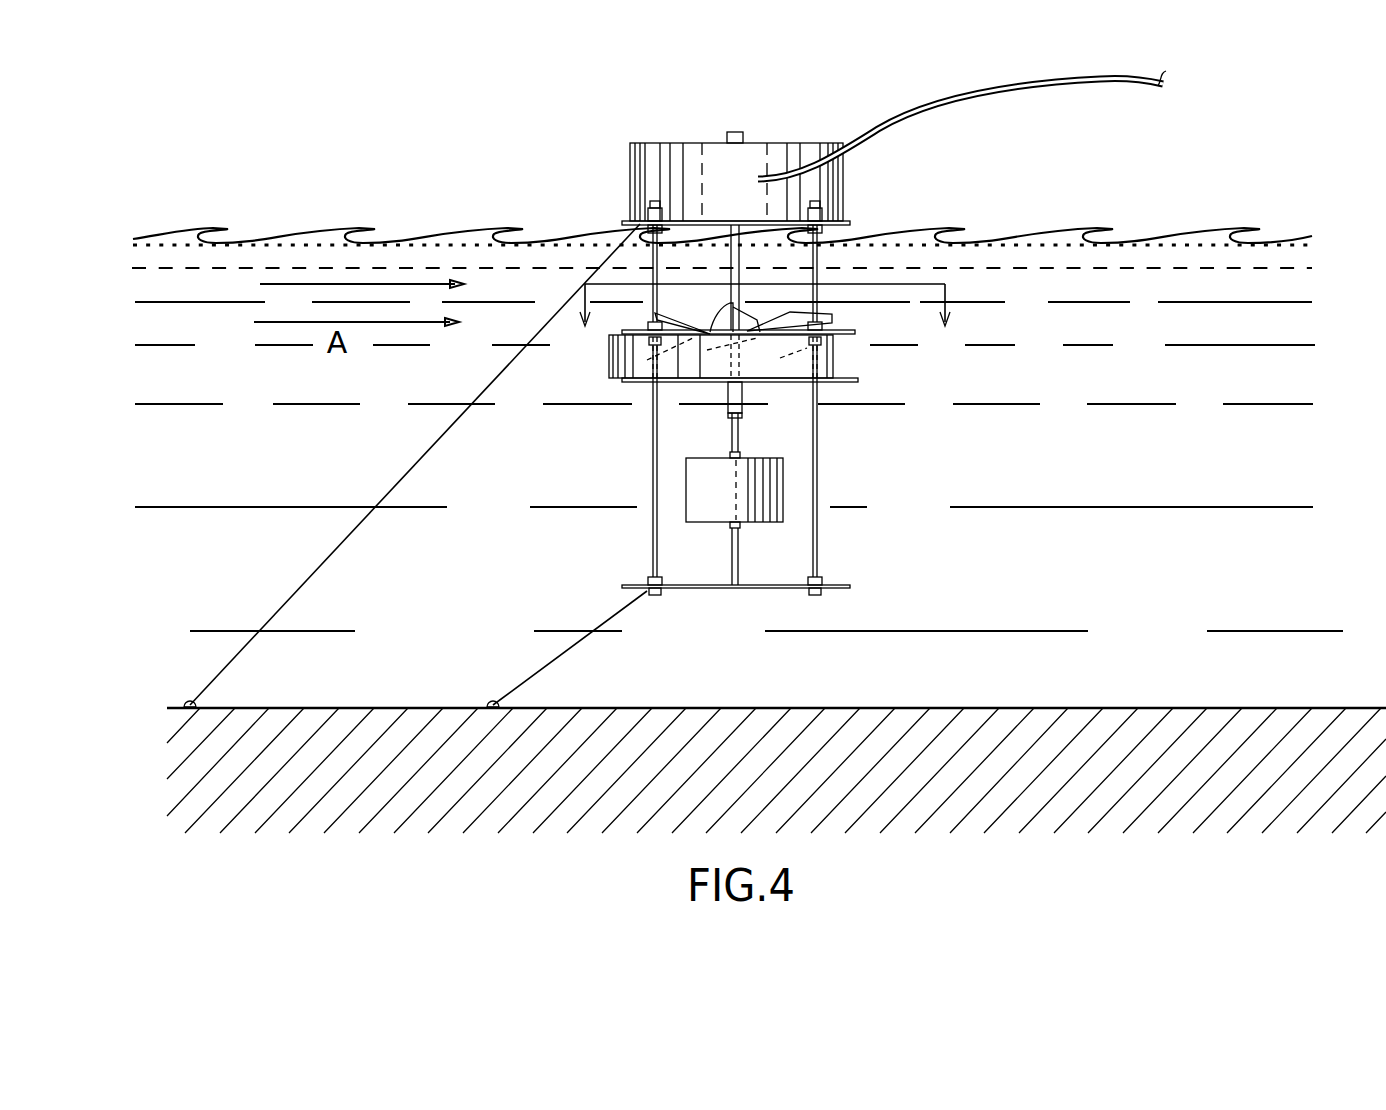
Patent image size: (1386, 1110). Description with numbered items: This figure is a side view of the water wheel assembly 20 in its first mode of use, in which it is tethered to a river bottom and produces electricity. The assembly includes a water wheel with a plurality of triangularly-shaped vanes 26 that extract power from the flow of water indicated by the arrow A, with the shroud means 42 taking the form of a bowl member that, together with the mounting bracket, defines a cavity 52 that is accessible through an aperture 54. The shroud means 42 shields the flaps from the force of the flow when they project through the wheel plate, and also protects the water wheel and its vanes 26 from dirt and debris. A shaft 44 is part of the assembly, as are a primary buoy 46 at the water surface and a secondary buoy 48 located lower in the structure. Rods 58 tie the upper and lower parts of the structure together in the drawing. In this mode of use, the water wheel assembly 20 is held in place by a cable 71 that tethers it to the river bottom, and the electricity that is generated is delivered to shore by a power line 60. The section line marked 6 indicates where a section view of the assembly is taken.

The water wheel assembly 20 is at (658, 105).
The primary buoy 46 is at (663, 177).
The power line 60 is at (978, 92).
The triangularly-shaped vanes 26 is at (790, 314).
The shroud means 42 is at (623, 352).
The shaft 44 is at (732, 436).
The secondary buoy 48 is at (712, 490).
The cavity 52 is at (764, 358).
The aperture 54 is at (858, 357).
The support rods 58 is at (655, 532).
The cable 71 is at (283, 600).
The section line 6- 6 is at (761, 324).